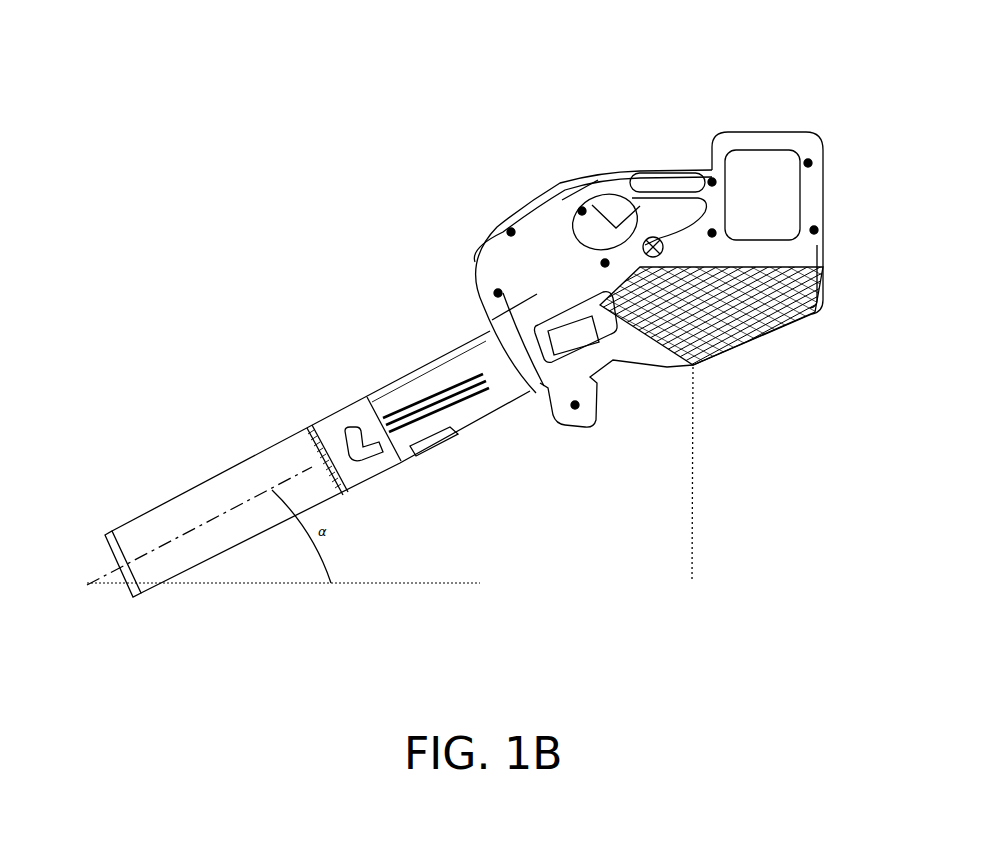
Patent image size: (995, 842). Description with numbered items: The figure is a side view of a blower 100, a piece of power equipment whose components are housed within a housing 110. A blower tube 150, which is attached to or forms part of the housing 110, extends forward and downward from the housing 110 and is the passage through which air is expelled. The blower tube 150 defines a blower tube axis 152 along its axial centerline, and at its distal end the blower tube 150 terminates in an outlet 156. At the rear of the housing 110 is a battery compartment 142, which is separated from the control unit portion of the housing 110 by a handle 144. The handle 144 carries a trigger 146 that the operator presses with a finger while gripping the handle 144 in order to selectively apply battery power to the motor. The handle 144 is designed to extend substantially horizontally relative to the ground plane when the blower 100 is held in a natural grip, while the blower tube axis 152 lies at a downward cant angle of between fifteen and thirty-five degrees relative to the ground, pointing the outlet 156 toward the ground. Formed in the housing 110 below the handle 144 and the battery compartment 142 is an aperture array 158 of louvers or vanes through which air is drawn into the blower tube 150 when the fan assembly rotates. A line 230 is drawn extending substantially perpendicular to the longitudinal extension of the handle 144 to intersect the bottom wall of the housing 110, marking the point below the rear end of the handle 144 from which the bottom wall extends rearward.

The blower 100 is at (446, 332).
The housing 110 is at (646, 240).
The battery compartment 142 is at (782, 147).
The handle 144 is at (684, 174).
The trigger 146 is at (622, 165).
The blower tube 150 is at (279, 492).
The blower tube axis 152 is at (189, 523).
The outlet 156 is at (85, 592).
The aperture array 158 is at (726, 276).
The line 230 is at (740, 474).